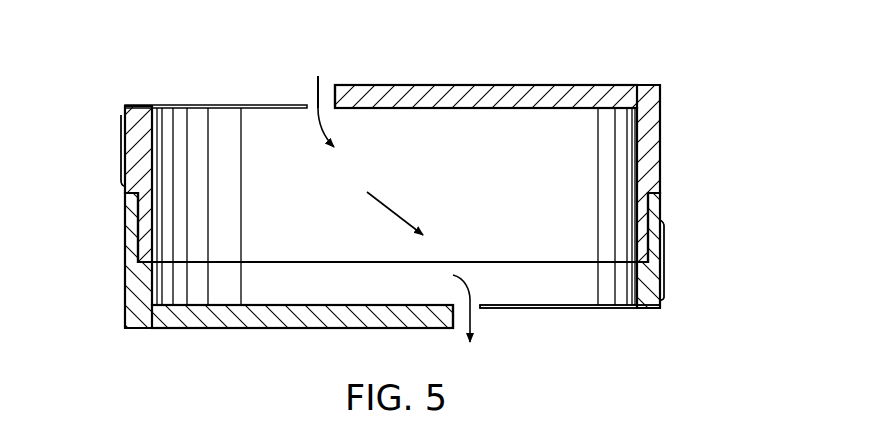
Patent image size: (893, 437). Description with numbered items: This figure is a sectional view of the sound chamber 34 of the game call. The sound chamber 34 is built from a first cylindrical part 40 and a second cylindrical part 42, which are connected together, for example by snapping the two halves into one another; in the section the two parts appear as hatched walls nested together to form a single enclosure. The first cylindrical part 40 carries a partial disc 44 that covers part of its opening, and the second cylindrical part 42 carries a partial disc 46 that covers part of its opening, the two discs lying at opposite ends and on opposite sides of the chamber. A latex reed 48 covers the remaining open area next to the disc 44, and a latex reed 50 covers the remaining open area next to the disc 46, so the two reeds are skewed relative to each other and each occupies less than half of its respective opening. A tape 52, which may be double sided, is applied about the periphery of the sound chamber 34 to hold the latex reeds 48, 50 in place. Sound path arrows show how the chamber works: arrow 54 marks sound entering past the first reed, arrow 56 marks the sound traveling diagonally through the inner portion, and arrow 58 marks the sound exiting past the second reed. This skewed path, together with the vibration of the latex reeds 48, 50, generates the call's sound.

The sound chamber 34 is at (710, 56).
The first cylindrical part 40 is at (140, 105).
The second cylindrical part 42 is at (143, 328).
The partial disc 44 is at (483, 84).
The partial disc 46 is at (268, 328).
The latex reed 48 is at (197, 105).
The latex reed 50 is at (580, 310).
The tape 52 is at (122, 140).
The sound path arrow (entering) 54 is at (316, 95).
The sound path arrow (within inner portion) 56 is at (392, 205).
The sound path arrow (exiting) 58 is at (472, 310).